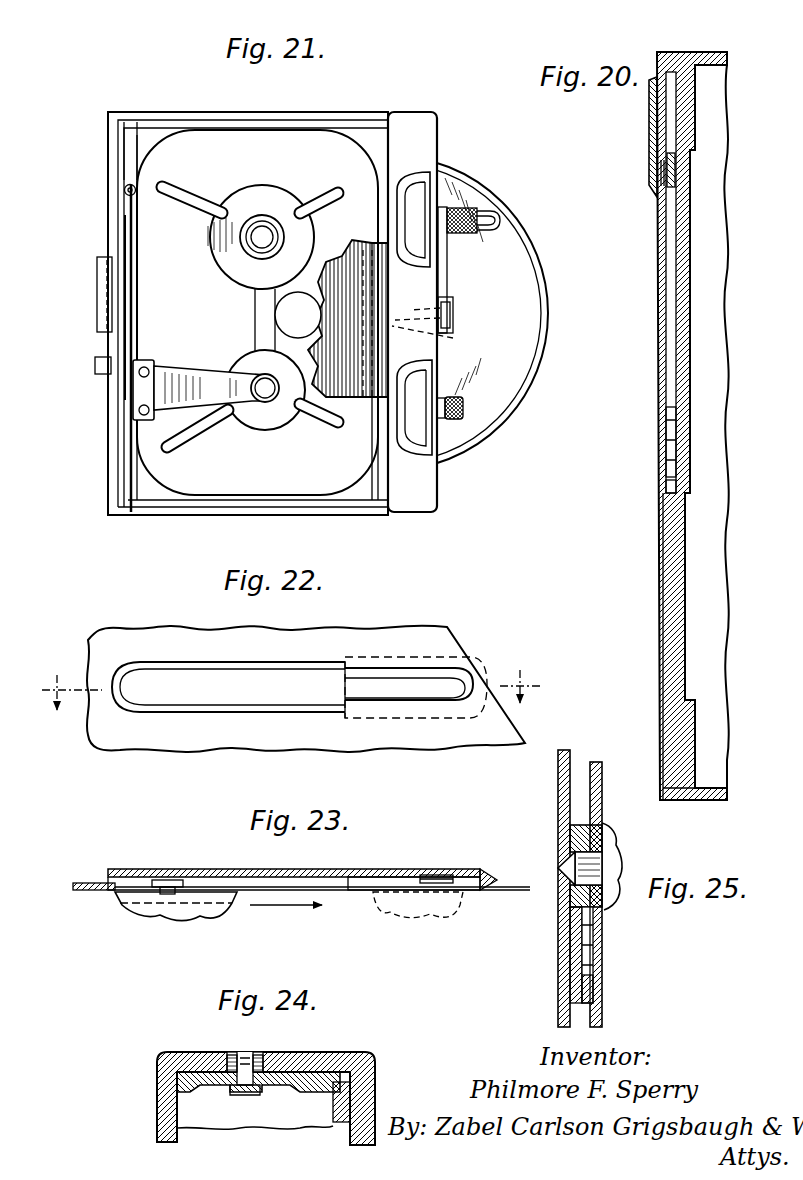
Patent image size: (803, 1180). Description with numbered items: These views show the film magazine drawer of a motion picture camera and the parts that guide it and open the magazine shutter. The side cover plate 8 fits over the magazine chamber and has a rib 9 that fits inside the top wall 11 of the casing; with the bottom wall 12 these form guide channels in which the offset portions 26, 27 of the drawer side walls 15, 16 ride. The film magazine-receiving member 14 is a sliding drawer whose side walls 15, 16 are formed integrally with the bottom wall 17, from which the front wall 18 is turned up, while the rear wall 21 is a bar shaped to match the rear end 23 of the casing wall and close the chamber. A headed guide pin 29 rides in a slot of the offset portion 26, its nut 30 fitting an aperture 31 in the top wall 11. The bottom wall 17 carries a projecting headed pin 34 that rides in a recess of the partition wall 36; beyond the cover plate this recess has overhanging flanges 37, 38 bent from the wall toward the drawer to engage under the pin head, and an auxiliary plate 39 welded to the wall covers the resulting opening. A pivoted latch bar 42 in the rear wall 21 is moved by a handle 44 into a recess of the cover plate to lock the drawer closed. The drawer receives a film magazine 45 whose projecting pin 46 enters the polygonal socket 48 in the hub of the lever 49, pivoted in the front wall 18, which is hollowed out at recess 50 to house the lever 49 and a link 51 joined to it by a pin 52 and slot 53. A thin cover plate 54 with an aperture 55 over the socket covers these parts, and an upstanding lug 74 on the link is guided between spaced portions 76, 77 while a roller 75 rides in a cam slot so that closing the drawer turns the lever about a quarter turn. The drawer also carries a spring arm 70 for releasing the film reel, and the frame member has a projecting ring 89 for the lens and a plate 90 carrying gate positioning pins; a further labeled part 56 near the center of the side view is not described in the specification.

In FIG. 21, the side cover plate 8 is at (332, 272).
In FIG. 24, the side cover plate 8 is at (160, 1116).
In FIG. 24, the rib 9 is at (180, 1052).
In FIG. 21, the top wall 11 is at (127, 118).
In FIG. 24, the top wall 11 is at (325, 1062).
In FIG. 21, the bottom wall 12 is at (138, 508).
In FIG. 23, the film magazine-receiving member 14 is at (170, 921).
In FIG. 21, the side wall 15 is at (296, 120).
In FIG. 20, the side wall 15 is at (728, 75).
In FIG. 24, the side wall 15 is at (376, 1092).
In FIG. 21, the side wall 16 is at (336, 506).
In FIG. 20, the side wall 16 is at (708, 800).
In FIG. 21, the bottom wall 17 is at (363, 482).
In FIG. 24, the bottom wall 17 is at (333, 1123).
In FIG. 21, the front wall 18 is at (128, 243).
In FIG. 20, the front wall 18 is at (682, 632).
In FIG. 25, the front wall 18 is at (600, 763).
In FIG. 21, the rear wall 21 is at (430, 137).
In FIG. 22, the rear end 23 is at (292, 680).
In FIG. 21, the offset portion 26 is at (340, 126).
In FIG. 21, the offset portion 27 is at (268, 506).
In FIG. 24, the headed guide pin 29 is at (240, 1095).
In FIG. 24, the nut 30 is at (242, 1052).
In FIG. 24, the aperture 31 is at (225, 1056).
In FIG. 23, the projecting headed pin 34 is at (190, 868).
In FIG. 22, the partition wall 36 is at (205, 750).
In FIG. 23, the partition wall 36 is at (84, 882).
In FIG. 22, the overhanging flange 37 is at (355, 673).
In FIG. 22, the overhanging flange 38 is at (362, 703).
In FIG. 23, the overhanging flange 38 is at (390, 890).
In FIG. 23, the auxiliary plate 39 is at (424, 868).
In FIG. 21, the latch bar 42 is at (455, 338).
In FIG. 21, the handle 44 is at (445, 266).
In FIG. 21, the film magazine 45 is at (214, 321).
In FIG. 25, the film magazine 45 is at (612, 848).
In FIG. 25, the projecting pin 46 is at (558, 876).
In FIG. 25, the polygonal socket 48 is at (600, 898).
In FIG. 20, the lever 49 is at (664, 425).
In FIG. 25, the lever 49 is at (575, 910).
In FIG. 20, the recess 50 is at (664, 490).
In FIG. 20, the link 51 is at (683, 300).
In FIG. 25, the link 51 is at (590, 985).
In FIG. 25, the pin 52 is at (575, 983).
In FIG. 25, the slot 53 is at (575, 945).
In FIG. 20, the cover plate 54 is at (667, 636).
In FIG. 25, the cover plate 54 is at (565, 795).
In FIG. 25, the aperture 55 is at (562, 860).
In FIG. 21, the hub 56 is at (266, 228).
In FIG. 21, the spring arm 70 is at (193, 378).
In FIG. 20, the upstanding lug 74 is at (660, 175).
In FIG. 21, the roller 75 is at (122, 189).
In FIG. 20, the roller 75 is at (690, 190).
In FIG. 20, the spaced portion 76 is at (656, 137).
In FIG. 20, the spaced portion 77 is at (684, 168).
In FIG. 21, the projecting ring 89 is at (97, 291).
In FIG. 21, the plate 90 is at (124, 343).